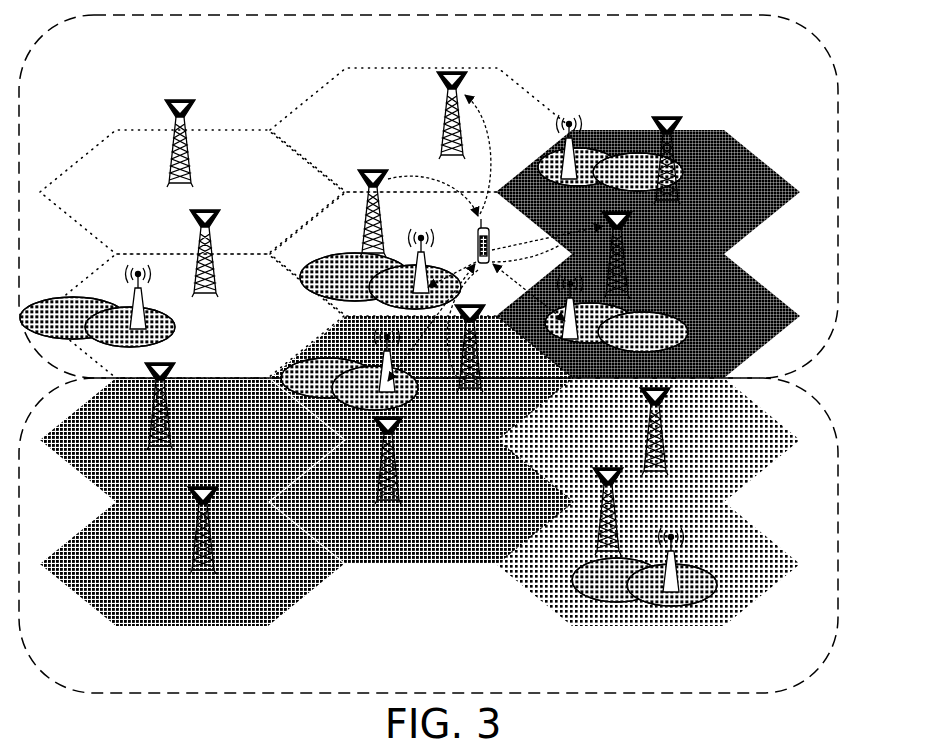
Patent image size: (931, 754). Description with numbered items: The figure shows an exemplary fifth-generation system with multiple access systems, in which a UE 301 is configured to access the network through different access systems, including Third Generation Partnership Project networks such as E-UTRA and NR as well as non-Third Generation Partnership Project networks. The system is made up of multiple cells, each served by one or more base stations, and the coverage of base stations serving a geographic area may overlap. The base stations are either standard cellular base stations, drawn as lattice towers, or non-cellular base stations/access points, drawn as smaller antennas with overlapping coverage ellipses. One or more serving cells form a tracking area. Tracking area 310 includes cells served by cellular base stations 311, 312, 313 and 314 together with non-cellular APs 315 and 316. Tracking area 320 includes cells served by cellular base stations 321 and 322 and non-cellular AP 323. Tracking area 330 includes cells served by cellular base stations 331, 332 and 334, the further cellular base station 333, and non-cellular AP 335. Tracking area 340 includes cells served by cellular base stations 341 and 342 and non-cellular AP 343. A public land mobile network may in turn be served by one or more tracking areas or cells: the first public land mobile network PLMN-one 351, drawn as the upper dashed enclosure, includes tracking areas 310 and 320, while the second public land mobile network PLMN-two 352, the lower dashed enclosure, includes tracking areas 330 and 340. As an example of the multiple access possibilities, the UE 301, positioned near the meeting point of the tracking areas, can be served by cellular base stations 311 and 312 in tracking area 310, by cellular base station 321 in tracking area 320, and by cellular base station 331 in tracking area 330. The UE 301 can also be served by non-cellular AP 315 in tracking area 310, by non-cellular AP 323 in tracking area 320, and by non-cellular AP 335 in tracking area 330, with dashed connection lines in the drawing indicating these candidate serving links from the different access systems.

The UE 301 is at (489, 248).
The tracking area 310 is at (164, 98).
The 3GPP base station 311 is at (366, 180).
The 3GPP base station 312 is at (445, 100).
The 3GPP base station 313 is at (186, 106).
The 3GPP base station 314 is at (225, 209).
The non-3GPP AP 315 is at (434, 224).
The non-3GPP AP 316 is at (151, 263).
The tracking area 320 is at (694, 126).
The 3GPP base station 321 is at (630, 232).
The 3GPP base station 322 is at (666, 118).
The non-3GPP AP 323 is at (556, 128).
The tracking area 330 is at (368, 612).
The 3GPP base station 331 is at (480, 338).
The 3GPP base station 332 is at (382, 455).
The 3GPP base station 333 is at (178, 361).
The 3GPP base station 334 is at (210, 487).
The non-3GPP AP 335 is at (384, 347).
The tracking area 340 is at (779, 609).
The 3GPP base station 341 is at (648, 410).
The 3GPP base station 342 is at (602, 478).
The non-3GPP AP 343 is at (690, 527).
The PLMN-1 351 is at (426, 61).
The PLMN-2 352 is at (419, 679).